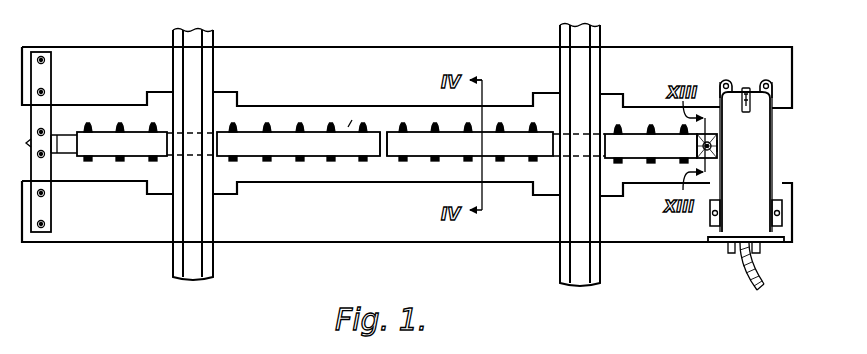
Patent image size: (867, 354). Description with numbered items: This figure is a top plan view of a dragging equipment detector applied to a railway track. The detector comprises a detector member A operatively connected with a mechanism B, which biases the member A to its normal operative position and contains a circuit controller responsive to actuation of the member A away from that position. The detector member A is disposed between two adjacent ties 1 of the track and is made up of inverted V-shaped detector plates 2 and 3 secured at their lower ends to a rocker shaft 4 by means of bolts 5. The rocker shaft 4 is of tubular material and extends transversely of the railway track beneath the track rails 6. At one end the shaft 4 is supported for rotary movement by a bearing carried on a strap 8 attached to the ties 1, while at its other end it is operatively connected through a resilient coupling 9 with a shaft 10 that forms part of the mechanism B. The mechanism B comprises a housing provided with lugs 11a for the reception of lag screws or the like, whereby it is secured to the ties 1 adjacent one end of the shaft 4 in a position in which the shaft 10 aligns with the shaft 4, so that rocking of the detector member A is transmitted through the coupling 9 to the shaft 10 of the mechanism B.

The ties 1 is at (288, 53).
The detector plate 2 is at (285, 140).
The detector plate 3 is at (112, 135).
The rocker shaft 4 is at (384, 158).
The bolts 5 is at (268, 125).
The track rails 6 is at (173, 263).
The strap 8 is at (45, 211).
The resilient coupling 9 is at (716, 160).
The shaft 10 is at (717, 147).
The lugs 11a is at (761, 82).
The detector member A is at (348, 127).
The mechanism B is at (746, 186).